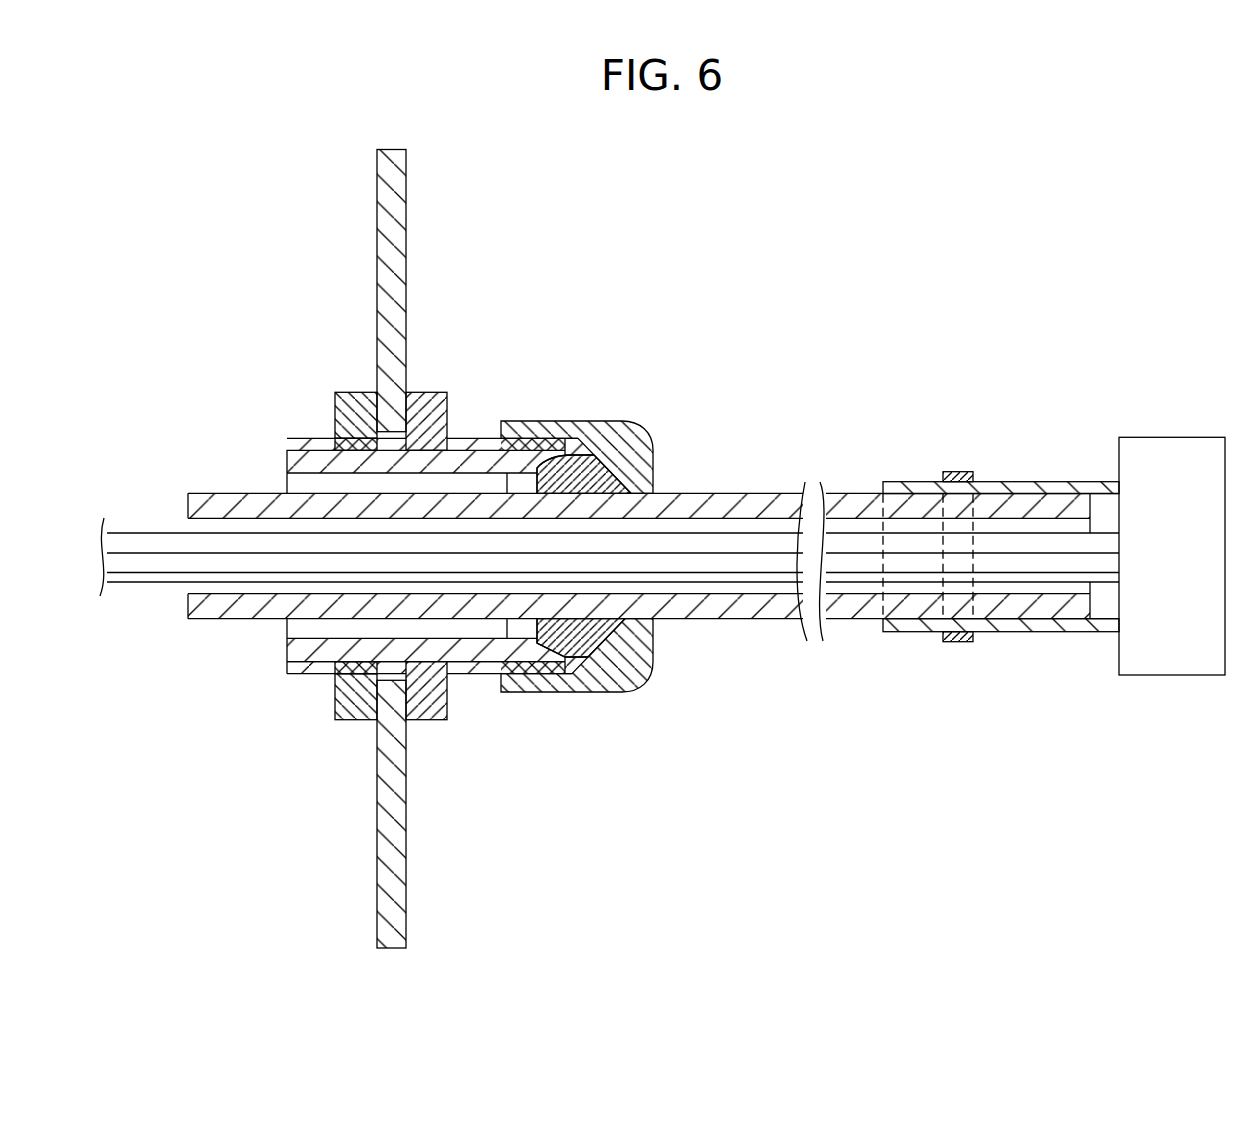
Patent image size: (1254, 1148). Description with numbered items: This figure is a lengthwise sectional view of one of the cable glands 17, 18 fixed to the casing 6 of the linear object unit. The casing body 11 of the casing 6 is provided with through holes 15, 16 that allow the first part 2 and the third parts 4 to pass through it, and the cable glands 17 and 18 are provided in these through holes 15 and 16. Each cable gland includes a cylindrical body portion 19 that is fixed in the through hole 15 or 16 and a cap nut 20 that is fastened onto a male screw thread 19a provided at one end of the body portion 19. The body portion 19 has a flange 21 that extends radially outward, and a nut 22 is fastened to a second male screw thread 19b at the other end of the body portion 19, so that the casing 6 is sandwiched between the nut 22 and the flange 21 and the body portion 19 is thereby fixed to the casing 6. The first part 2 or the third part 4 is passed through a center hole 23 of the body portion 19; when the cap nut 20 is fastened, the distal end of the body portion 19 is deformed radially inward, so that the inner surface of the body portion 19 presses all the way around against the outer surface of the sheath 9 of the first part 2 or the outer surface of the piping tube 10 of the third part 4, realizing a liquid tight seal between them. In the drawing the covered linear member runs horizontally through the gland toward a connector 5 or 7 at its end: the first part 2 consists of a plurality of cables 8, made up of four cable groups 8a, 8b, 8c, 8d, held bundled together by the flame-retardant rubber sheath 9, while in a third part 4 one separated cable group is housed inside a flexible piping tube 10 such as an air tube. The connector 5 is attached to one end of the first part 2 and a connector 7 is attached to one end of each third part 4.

The casing 6 is at (445, 534).
The casing body 11 is at (428, 162).
The cable gland 17 is at (500, 562).
The cable gland 18 is at (597, 378).
The nut 22 is at (335, 400).
The flange 21 is at (445, 408).
The through hole 15 is at (435, 640).
The through hole 16 is at (435, 640).
The body portion 19 is at (469, 696).
The male screw thread 19a is at (500, 692).
The male screw thread 19b is at (306, 674).
The center hole 23 is at (442, 472).
The cap nut 20 is at (653, 447).
The sheath 9 is at (653, 612).
The piping tube 10 is at (841, 619).
The cable 8 is at (637, 622).
The cable group 8a is at (637, 622).
The cable group 8b is at (637, 622).
The cable group 8c is at (637, 622).
The cable group 8d is at (1030, 560).
The first part 2 is at (1001, 470).
The third part 4 is at (976, 383).
The connector 5 is at (1172, 509).
The connector 7 is at (1162, 437).